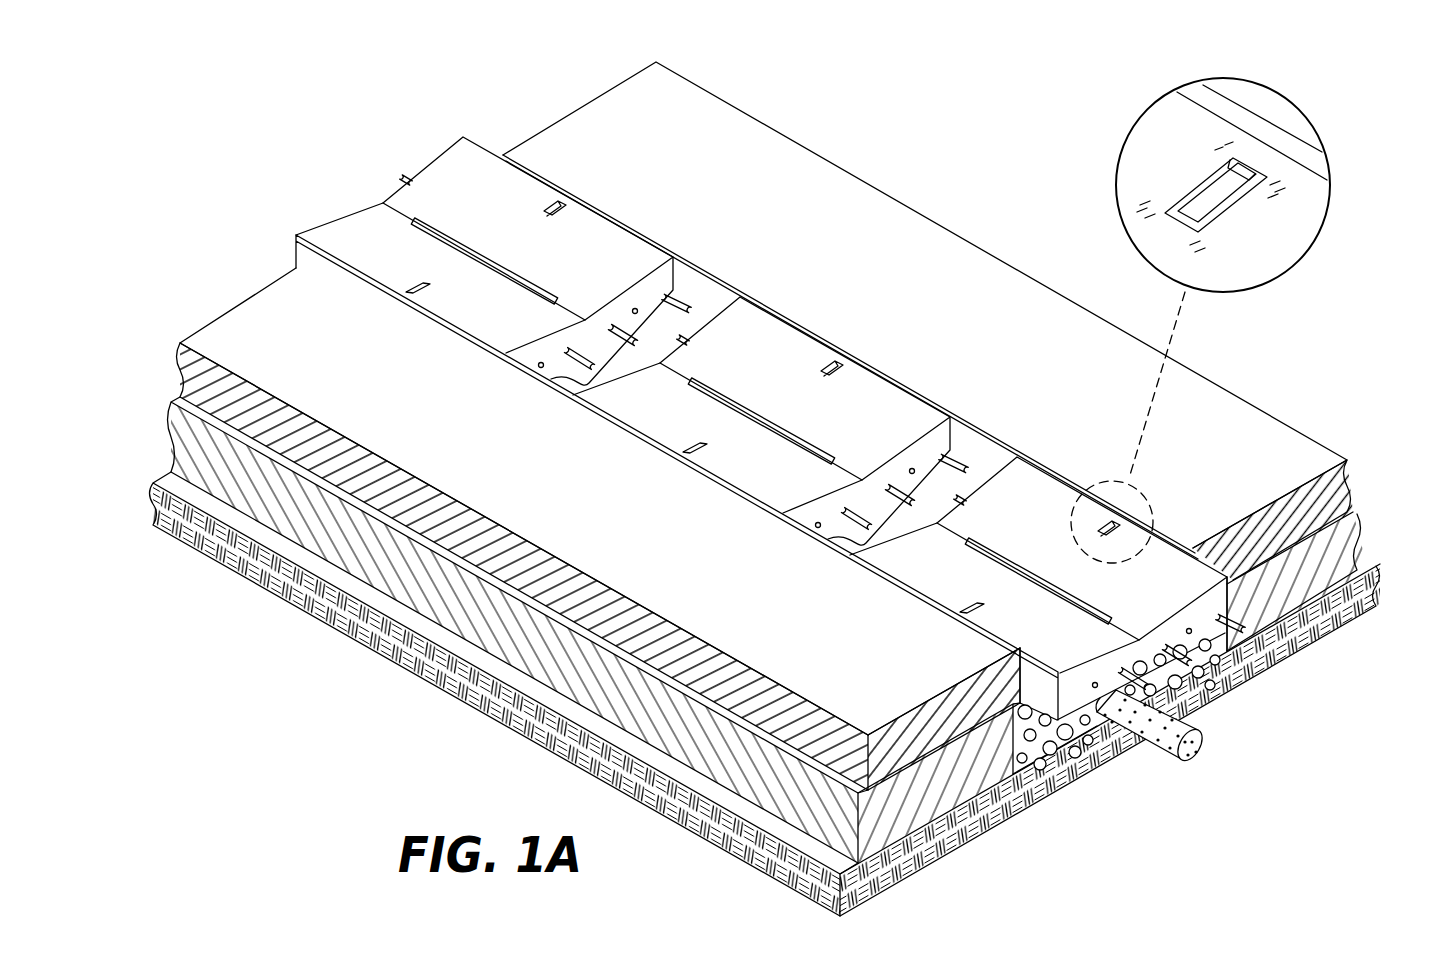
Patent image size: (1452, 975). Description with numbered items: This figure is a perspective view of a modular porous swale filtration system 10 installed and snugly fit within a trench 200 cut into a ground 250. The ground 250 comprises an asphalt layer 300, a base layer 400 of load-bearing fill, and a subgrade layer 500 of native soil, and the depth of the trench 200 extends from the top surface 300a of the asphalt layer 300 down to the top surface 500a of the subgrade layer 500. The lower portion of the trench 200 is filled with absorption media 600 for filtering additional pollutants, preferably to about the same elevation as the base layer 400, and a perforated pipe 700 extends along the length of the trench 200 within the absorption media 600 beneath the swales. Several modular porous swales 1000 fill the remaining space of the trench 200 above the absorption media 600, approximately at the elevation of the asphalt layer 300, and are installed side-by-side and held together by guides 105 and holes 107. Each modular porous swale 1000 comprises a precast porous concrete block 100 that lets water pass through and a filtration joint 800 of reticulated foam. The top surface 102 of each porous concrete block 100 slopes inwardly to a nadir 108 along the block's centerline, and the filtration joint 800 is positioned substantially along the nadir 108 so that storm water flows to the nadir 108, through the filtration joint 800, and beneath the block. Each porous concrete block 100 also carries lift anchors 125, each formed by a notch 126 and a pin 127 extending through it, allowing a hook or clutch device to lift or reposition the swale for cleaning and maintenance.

The modular porous swale filtration system 10 is at (992, 113).
The porous concrete block 100 is at (355, 236).
The top surface 102 is at (809, 372).
The guides 105 is at (538, 366).
The holes 107 is at (639, 310).
The nadir 108 is at (583, 314).
The lift anchors 125 is at (576, 197).
The notch 126 is at (1223, 185).
The pin 127 is at (1238, 170).
The trench 200 is at (1148, 715).
The ground 250 is at (754, 489).
The asphalt layer 300 is at (794, 426).
The top surface of the asphalt layer 300a is at (1267, 445).
The base layer 400 is at (1368, 570).
The subgrade layer 500 is at (786, 694).
The top surface of the subgrade layer 500a is at (1093, 735).
The absorption media 600 is at (1175, 680).
The perforated pipe 700 is at (1203, 750).
The filtration joint 800 is at (480, 250).
The modular porous swale 1000 is at (799, 382).